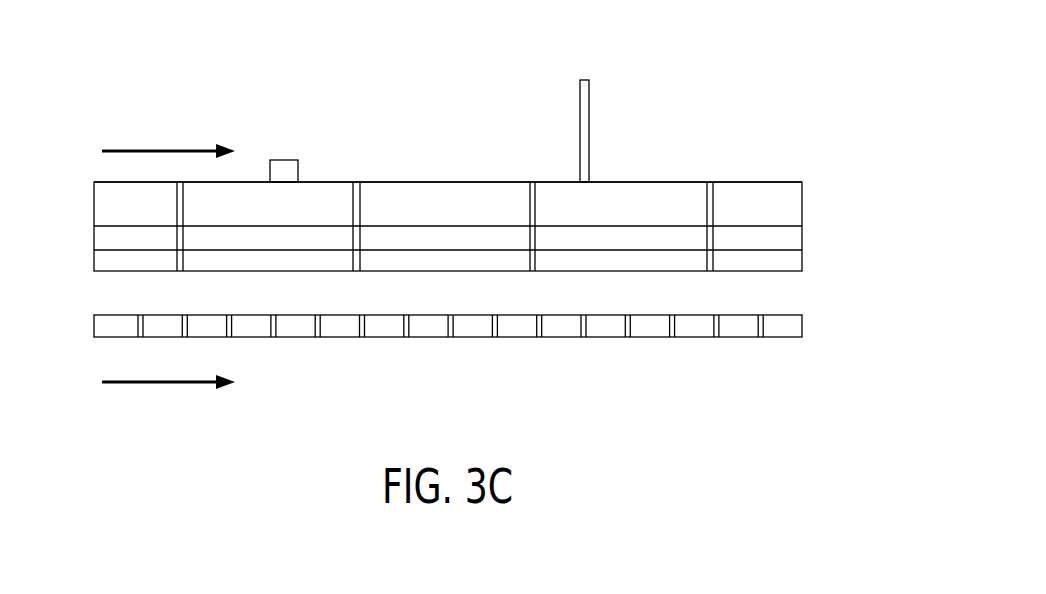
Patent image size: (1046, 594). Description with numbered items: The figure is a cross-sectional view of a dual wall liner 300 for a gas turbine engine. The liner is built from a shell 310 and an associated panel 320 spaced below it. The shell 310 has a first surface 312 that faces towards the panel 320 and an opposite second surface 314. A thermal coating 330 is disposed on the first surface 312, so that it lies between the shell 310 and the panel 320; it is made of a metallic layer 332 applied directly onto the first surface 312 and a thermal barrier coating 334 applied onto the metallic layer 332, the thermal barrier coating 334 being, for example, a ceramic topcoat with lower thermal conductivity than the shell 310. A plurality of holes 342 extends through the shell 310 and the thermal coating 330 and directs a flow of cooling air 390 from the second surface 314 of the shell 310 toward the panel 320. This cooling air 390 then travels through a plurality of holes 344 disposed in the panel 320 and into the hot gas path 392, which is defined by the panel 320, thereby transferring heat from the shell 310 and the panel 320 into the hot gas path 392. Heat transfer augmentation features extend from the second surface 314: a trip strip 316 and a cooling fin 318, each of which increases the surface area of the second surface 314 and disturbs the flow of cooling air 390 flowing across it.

The dual wall liner 300 is at (702, 148).
The shell 310 is at (790, 205).
The first surface 312 is at (626, 228).
The second surface 314 is at (632, 182).
The trip strip 316 is at (293, 160).
The cooling fin 318 is at (586, 80).
The panel 320 is at (790, 327).
The thermal coating 330 is at (90, 228).
The metallic layer 332 is at (790, 238).
The thermal barrier coating 334 is at (790, 258).
The plurality of holes 342 is at (358, 208).
The plurality of holes 344 is at (453, 328).
The flow of cooling air 390 is at (158, 148).
The hot gas path 392 is at (162, 388).